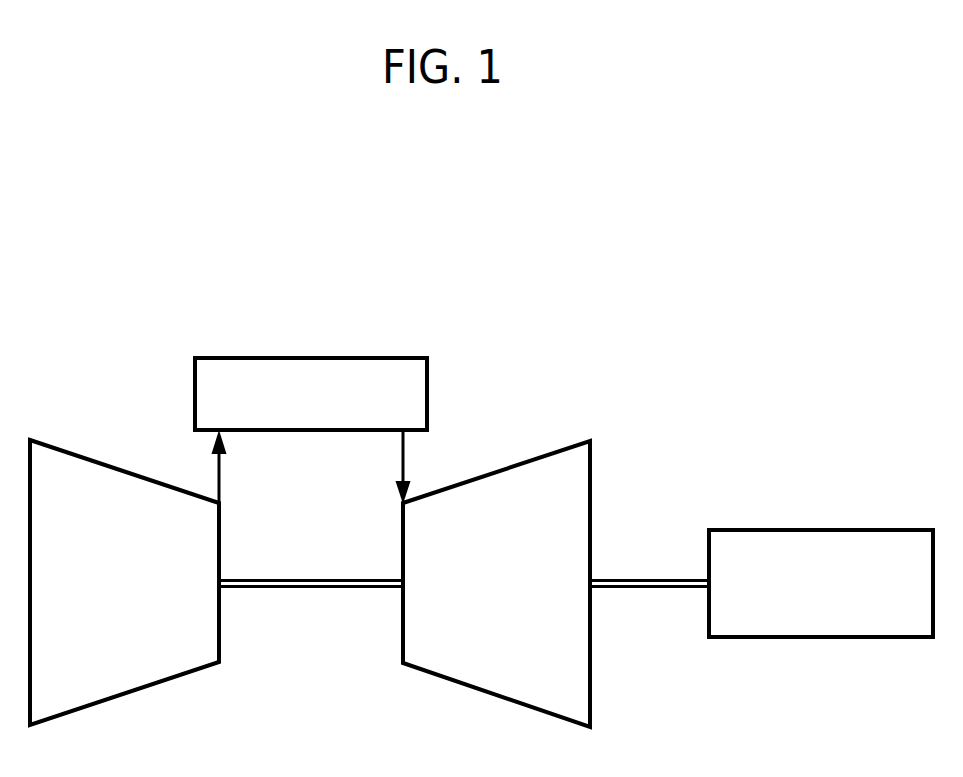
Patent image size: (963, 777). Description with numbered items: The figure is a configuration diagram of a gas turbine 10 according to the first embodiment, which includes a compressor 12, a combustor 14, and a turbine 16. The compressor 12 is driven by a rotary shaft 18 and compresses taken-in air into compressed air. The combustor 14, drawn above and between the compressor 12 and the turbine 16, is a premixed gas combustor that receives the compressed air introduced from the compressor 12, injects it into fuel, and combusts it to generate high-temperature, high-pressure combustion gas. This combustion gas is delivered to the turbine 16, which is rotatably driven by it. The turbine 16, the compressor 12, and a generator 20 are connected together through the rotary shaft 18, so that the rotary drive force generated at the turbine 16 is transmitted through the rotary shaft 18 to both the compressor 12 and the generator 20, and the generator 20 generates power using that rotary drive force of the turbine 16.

The gas turbine 10 is at (384, 242).
The compressor 12 is at (115, 465).
The combustor 14 is at (311, 357).
The turbine 16 is at (489, 470).
The rotary shaft 18 is at (311, 578).
The generator 20 is at (821, 528).